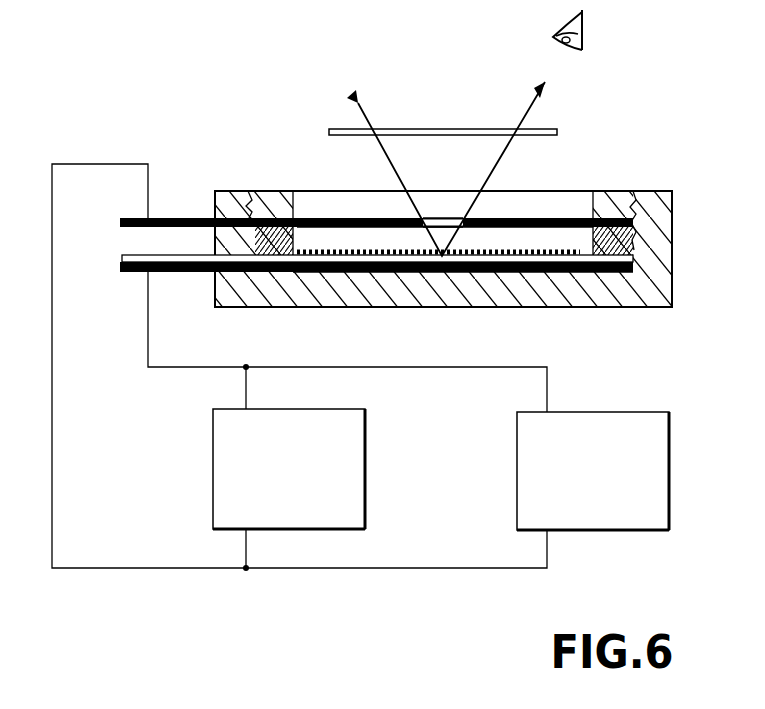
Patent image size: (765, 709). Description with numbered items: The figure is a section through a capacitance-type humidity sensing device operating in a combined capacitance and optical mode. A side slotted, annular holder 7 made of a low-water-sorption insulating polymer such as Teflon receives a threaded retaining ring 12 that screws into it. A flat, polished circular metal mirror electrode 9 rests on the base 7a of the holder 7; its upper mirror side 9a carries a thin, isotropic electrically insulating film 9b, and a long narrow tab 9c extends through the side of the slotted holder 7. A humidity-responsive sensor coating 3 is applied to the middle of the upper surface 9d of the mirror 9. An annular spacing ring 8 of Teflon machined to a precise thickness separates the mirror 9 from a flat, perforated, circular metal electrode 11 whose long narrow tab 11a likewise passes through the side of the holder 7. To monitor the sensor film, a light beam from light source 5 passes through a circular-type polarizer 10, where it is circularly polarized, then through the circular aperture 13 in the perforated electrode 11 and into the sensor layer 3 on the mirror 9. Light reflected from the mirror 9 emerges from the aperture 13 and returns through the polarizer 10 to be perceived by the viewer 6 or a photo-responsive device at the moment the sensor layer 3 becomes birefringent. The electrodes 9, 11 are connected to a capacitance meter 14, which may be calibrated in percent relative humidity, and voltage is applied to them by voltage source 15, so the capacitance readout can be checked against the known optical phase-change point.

The humidity-responsive sensor coating 3 is at (586, 270).
The light source 5 is at (352, 96).
The observer eye 6 is at (588, 33).
The side slotted annular holder 7 is at (676, 200).
The base of holder 7a is at (530, 297).
The annular spacing ring 8 is at (620, 248).
The mirror electrode 9 is at (382, 274).
The upper mirror side 9a is at (295, 252).
The insulating film 9b is at (130, 255).
The tab of mirror electrode 9c is at (188, 274).
The upper surface of mirror 9d is at (472, 265).
The circular-type polarizer 10 is at (417, 126).
The perforated metal electrode 11 is at (513, 214).
The tab of perforated electrode 11a is at (183, 215).
The threaded retaining ring 12 is at (611, 190).
The circular aperture 13 is at (452, 214).
The capacitance meter 14 is at (289, 469).
The voltage source 15 is at (593, 471).